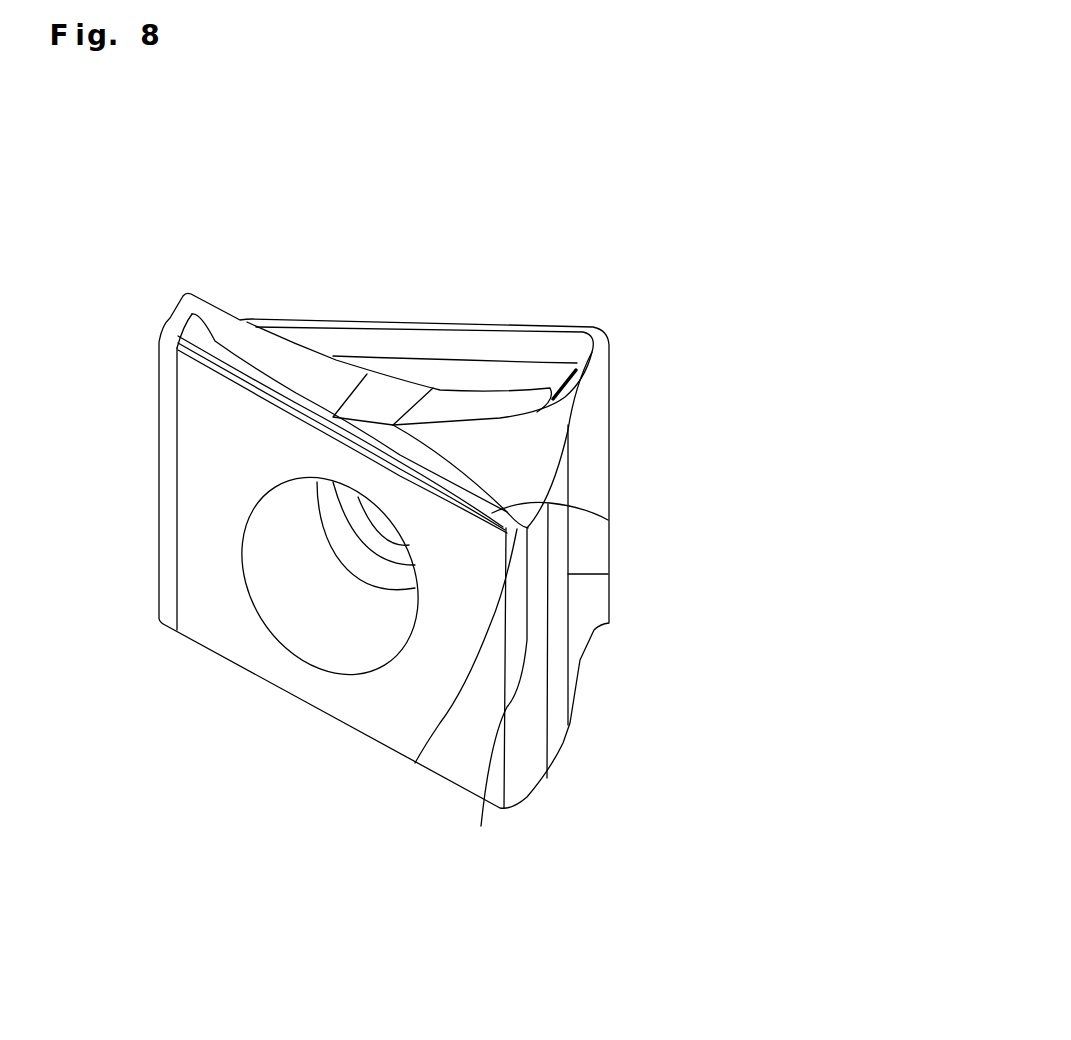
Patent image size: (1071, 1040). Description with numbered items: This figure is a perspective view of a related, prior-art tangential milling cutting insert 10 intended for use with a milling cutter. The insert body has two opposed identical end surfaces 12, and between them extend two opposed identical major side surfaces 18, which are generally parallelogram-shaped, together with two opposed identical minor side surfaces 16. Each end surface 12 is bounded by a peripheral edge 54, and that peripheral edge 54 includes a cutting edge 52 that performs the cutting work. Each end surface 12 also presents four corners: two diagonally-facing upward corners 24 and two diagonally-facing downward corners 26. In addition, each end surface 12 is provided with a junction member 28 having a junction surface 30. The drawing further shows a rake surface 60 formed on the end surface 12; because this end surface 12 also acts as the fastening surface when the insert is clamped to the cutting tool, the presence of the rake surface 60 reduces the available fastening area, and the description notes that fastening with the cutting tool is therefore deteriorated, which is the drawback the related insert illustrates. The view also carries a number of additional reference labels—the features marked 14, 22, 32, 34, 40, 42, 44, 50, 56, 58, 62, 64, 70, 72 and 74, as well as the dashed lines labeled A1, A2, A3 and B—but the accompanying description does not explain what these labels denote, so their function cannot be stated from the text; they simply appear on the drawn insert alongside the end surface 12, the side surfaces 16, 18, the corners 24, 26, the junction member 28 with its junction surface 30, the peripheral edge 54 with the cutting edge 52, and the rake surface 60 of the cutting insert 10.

The tangential milling cutting insert 10 is at (650, 152).
The end surface 12 is at (445, 340).
The flank surface 14 is at (585, 555).
The minor side surface 16 is at (569, 575).
The major side surface 18 is at (463, 723).
The side surface 22 is at (162, 498).
The upward corner 24 is at (617, 346).
The downward corner 26 is at (153, 623).
The junction member 28 is at (231, 380).
The junction surface 30 is at (283, 358).
The chip breaker surface 32 is at (248, 352).
The platform 34 is at (394, 393).
The chamfer 40 is at (584, 397).
The recess 42 is at (426, 325).
The chamfer surface 44 is at (181, 298).
The corner radius 50 is at (611, 338).
The cutting edge 52 is at (359, 311).
The peripheral edge 54 is at (473, 320).
The corner land 56 is at (594, 370).
The corner edge 58 is at (607, 328).
The rake surface 60 is at (528, 402).
The secondary cutting edge 62 is at (588, 528).
The top surface portion 64 is at (531, 483).
The transition surface 70 is at (594, 498).
The lower surface portion 72 is at (569, 586).
The clamping hole 74 is at (310, 632).
The first axis A1 is at (379, 397).
The second axis A2 is at (378, 505).
The third axis A3 is at (568, 587).
The hole axis B is at (187, 744).